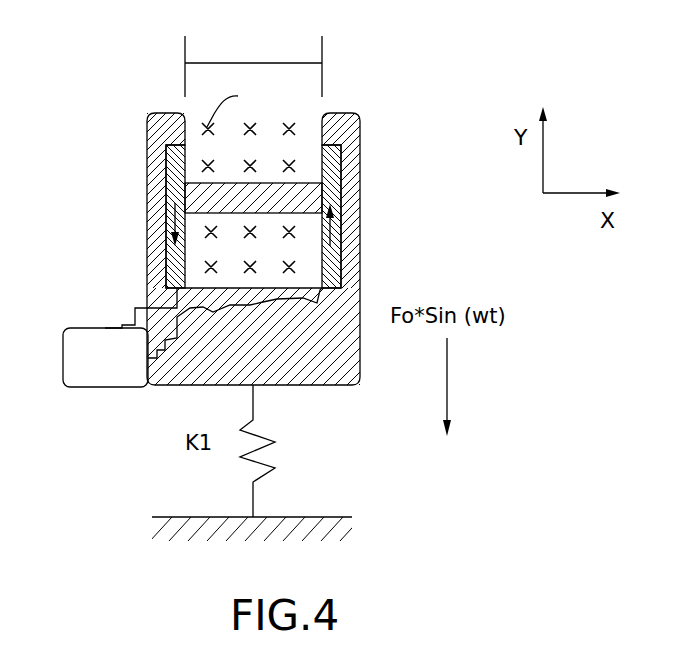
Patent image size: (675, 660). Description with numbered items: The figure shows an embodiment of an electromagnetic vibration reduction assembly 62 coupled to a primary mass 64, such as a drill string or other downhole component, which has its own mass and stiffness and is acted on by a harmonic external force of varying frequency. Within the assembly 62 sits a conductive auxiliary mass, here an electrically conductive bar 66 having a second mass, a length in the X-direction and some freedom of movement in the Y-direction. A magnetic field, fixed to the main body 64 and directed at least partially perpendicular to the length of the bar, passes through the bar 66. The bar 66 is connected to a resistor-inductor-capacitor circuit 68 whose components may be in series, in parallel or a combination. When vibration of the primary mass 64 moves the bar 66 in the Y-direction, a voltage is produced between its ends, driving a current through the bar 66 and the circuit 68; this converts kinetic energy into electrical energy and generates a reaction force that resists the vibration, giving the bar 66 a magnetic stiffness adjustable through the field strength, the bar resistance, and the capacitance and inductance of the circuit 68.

The electromagnetic vibration reduction assembly 62 is at (400, 102).
The primary mass 64 is at (357, 378).
The electrically conductive bar 66 is at (298, 193).
The RCL circuit 68 is at (80, 328).